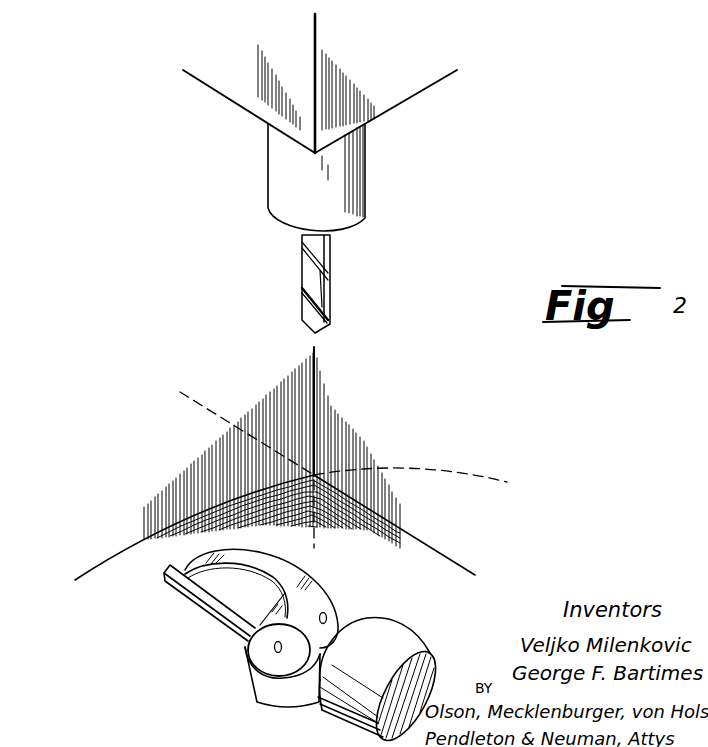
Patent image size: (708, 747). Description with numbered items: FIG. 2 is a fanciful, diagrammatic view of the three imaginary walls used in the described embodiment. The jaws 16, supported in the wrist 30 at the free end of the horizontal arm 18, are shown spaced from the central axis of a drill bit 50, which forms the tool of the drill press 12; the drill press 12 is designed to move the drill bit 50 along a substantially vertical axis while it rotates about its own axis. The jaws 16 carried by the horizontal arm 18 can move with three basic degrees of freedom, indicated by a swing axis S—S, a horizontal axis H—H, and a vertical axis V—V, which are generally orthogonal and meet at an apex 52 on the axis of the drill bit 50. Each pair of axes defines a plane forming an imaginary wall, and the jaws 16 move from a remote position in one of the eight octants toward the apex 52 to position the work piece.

The drill press 12 is at (399, 92).
The drill bit 50 is at (322, 292).
The apex 52 is at (315, 477).
The jaws 16 is at (195, 588).
The wrist 30 is at (282, 692).
The horizontal arm 18 is at (405, 647).